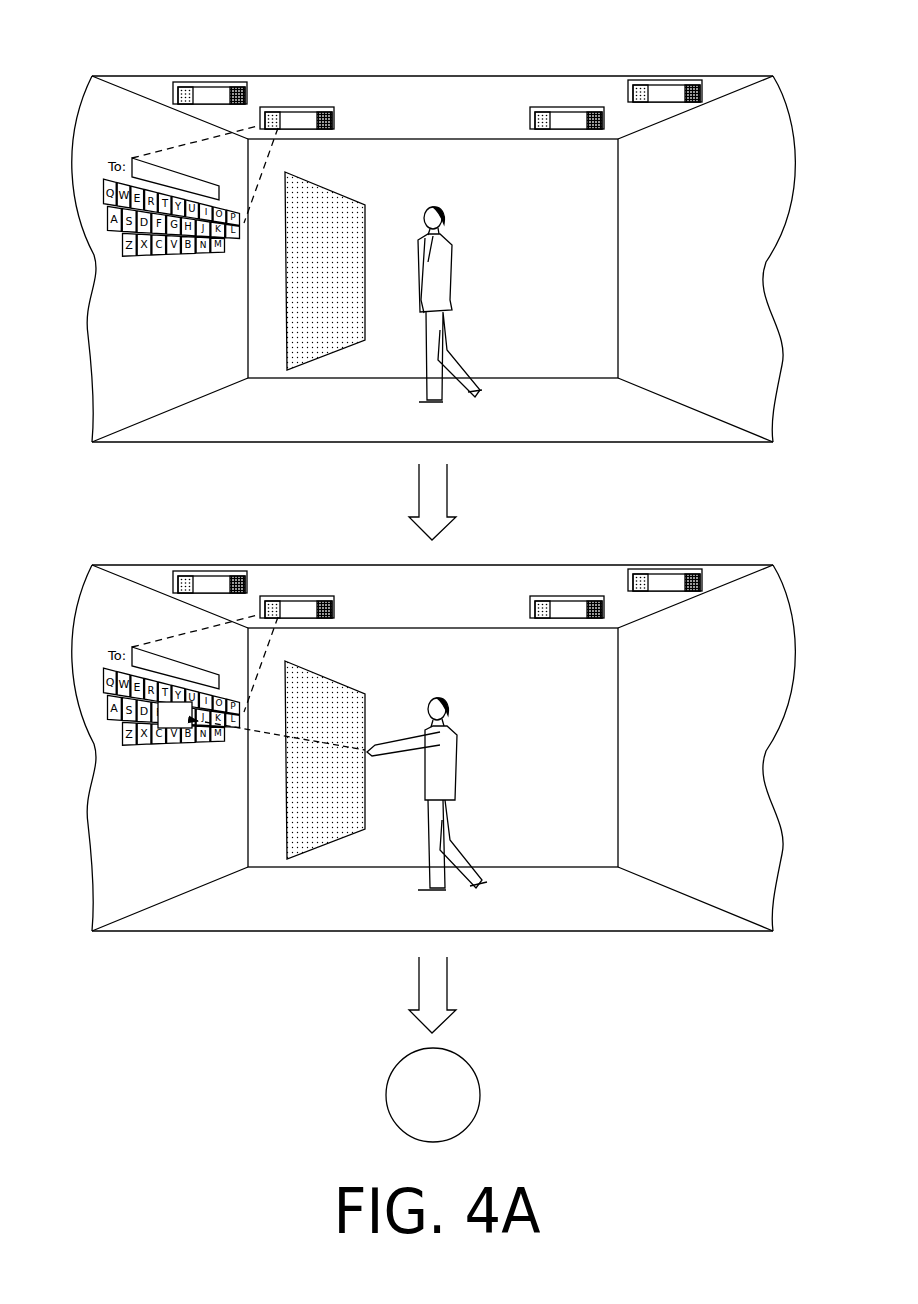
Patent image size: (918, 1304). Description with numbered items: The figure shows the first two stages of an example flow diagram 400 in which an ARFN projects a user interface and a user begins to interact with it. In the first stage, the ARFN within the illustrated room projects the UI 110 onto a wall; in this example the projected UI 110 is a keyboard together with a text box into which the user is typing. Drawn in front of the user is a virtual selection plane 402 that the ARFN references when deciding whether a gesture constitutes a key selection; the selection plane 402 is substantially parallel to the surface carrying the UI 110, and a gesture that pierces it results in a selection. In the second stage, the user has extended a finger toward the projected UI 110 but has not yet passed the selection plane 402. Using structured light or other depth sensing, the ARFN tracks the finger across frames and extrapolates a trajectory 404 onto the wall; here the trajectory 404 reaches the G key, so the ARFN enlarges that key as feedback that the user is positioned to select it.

The flow diagram 400 is at (108, 22).
The projected user interface 110 is at (186, 857).
The selection plane 402 is at (355, 195).
The trajectory 404 is at (275, 724).